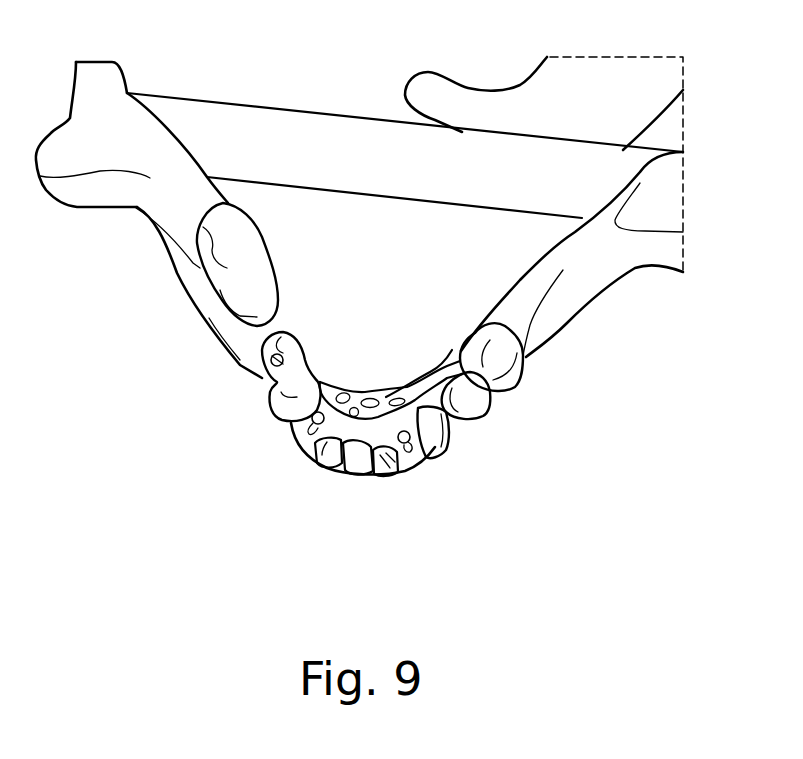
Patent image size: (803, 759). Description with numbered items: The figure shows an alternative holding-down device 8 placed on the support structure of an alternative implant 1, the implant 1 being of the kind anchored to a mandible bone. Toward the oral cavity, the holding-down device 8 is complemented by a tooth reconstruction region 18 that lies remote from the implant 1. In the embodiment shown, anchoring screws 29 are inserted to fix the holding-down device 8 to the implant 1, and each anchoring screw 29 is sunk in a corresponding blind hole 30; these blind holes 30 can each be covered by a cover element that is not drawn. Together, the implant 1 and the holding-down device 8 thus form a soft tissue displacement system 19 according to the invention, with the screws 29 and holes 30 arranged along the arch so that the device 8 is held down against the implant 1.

The implant 1 is at (383, 398).
The holding-down device 8 is at (392, 478).
The tooth reconstruction region 18 is at (331, 466).
The soft tissue displacement system 19 is at (217, 322).
The anchoring screws 29 is at (277, 354).
The blind holes 30 is at (282, 352).